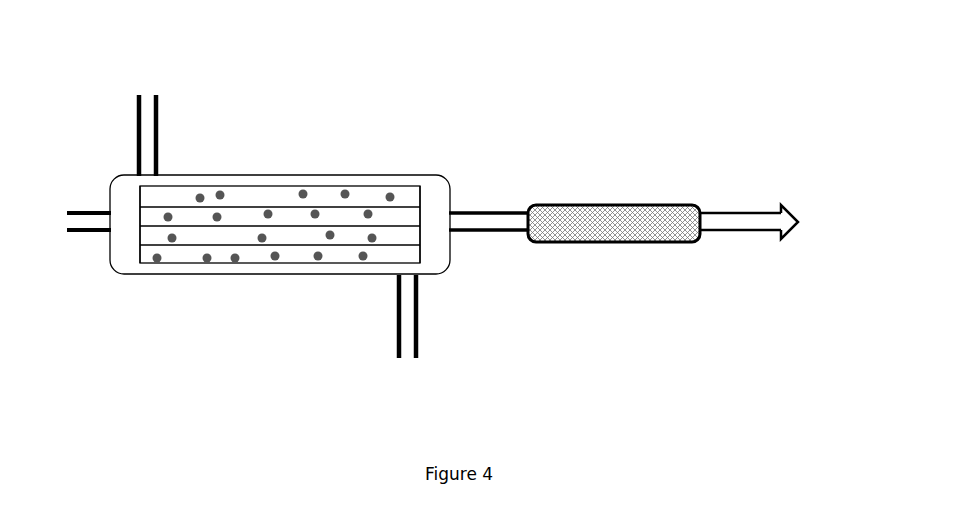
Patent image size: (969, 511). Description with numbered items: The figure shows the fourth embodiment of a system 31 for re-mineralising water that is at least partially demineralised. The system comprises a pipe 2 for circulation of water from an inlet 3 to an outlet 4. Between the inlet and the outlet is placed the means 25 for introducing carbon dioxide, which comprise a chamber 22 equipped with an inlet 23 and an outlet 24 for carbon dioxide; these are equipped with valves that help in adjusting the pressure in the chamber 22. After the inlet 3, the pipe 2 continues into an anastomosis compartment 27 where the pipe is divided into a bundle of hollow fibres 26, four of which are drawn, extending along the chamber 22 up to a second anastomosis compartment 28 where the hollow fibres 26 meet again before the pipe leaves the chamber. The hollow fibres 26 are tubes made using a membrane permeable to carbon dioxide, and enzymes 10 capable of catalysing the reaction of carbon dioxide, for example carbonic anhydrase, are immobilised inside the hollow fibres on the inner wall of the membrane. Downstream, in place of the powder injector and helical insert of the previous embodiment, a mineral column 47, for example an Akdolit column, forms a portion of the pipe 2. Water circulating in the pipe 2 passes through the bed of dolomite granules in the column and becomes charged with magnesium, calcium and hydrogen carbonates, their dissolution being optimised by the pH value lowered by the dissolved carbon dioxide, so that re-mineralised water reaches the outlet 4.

The system for re-mineralising water 31 is at (336, 124).
The means for introducing carbon dioxide 25 is at (198, 174).
The anastomosis compartment 27 is at (127, 247).
The second anastomosis compartment 28 is at (433, 197).
The chamber 22 is at (205, 259).
The hollow fibres 26 is at (252, 213).
The enzymes 10 is at (330, 240).
The inlet for CO2 23 is at (147, 105).
The outlet for CO2 24 is at (408, 327).
The inlet 3 is at (70, 216).
The pipe 2 is at (509, 233).
The mineral column 47 is at (593, 220).
The outlet 4 is at (783, 213).